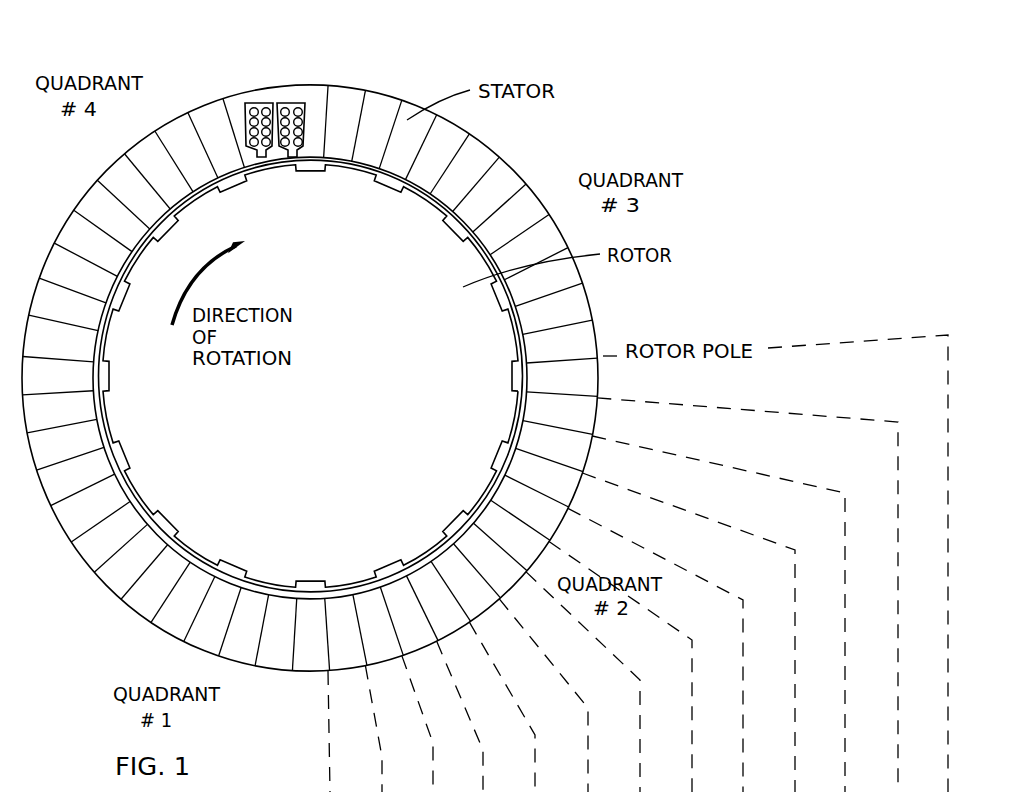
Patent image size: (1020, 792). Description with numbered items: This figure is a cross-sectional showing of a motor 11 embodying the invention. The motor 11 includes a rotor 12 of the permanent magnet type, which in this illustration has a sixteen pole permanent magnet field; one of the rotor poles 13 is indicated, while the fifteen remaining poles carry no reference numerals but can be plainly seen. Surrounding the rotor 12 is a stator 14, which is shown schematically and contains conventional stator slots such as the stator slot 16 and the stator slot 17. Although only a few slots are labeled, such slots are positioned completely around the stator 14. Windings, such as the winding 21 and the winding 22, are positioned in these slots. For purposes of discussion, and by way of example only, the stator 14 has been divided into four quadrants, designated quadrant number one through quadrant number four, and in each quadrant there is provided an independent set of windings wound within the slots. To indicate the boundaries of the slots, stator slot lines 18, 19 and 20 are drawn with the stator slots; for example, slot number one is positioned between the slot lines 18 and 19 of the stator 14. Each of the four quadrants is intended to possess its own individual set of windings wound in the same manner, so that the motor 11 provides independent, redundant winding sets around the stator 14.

The motor 11 is at (538, 142).
The rotor 12 is at (381, 332).
The rotor pole 13 is at (500, 332).
The stator 14 is at (387, 93).
The stator slot 16 is at (296, 100).
The stator slot 17 is at (263, 110).
The stator slot line 18 is at (327, 640).
The stator slot line 19 is at (360, 640).
The stator slot line 20 is at (393, 637).
The winding 21 is at (245, 97).
The coil 22 is at (283, 90).